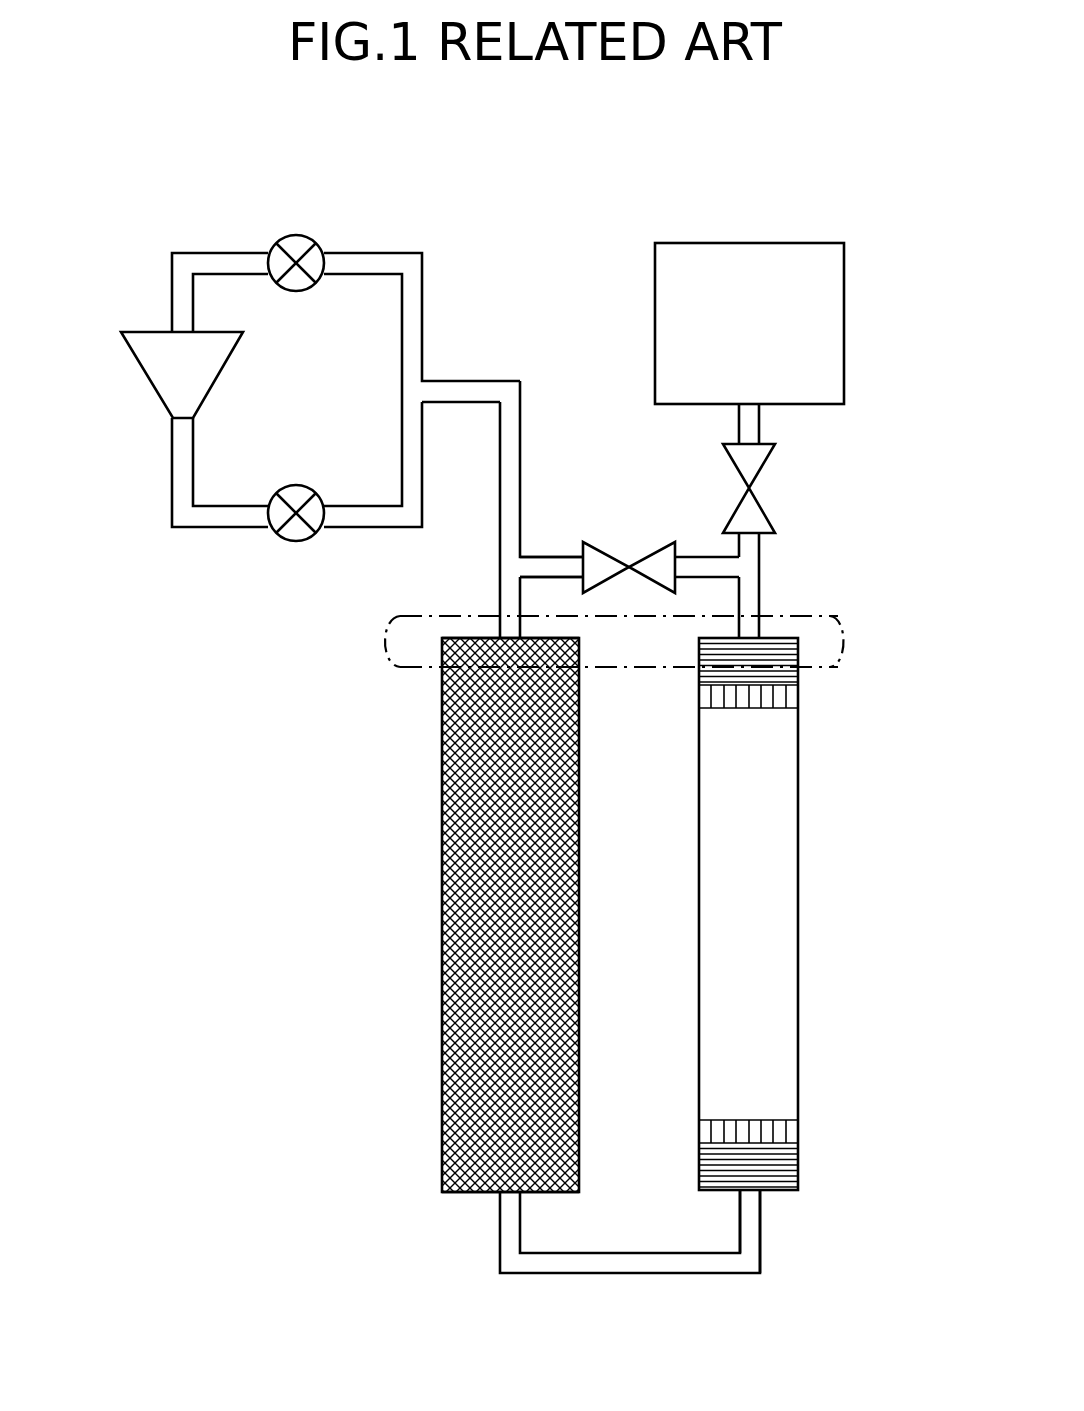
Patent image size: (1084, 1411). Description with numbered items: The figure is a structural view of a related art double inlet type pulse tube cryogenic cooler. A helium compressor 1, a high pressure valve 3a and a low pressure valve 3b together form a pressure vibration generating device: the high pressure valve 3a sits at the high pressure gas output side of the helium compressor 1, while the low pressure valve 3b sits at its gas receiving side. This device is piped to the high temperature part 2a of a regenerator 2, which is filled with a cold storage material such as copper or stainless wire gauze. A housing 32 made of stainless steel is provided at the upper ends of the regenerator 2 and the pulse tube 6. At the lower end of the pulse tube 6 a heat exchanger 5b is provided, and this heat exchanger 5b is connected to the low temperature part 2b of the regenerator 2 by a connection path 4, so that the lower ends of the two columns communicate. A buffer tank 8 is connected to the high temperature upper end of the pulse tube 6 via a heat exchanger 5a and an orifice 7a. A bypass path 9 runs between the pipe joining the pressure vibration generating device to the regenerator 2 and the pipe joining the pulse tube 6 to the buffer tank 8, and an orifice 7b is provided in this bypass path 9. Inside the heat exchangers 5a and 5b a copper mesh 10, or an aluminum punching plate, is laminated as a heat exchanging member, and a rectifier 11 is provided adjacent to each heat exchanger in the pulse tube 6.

The helium compressor 1 is at (148, 382).
The regenerator 2 is at (447, 745).
The high temperature part 2a is at (442, 651).
The low temperature part 2b is at (442, 1181).
The high pressure valve 3a is at (297, 485).
The low pressure valve 3b is at (297, 236).
The connection path 4 is at (645, 1276).
The heat exchanger 5a is at (798, 648).
The heat exchanger 5b is at (798, 1168).
The pulse tube 6 is at (798, 878).
The orifice 7a is at (757, 467).
The orifice 7b is at (620, 563).
The buffer tank 8 is at (745, 243).
The bypass path 9 is at (561, 560).
The copper mesh 10 is at (779, 1193).
The rectifier 11 is at (798, 698).
The housing 32 is at (648, 672).